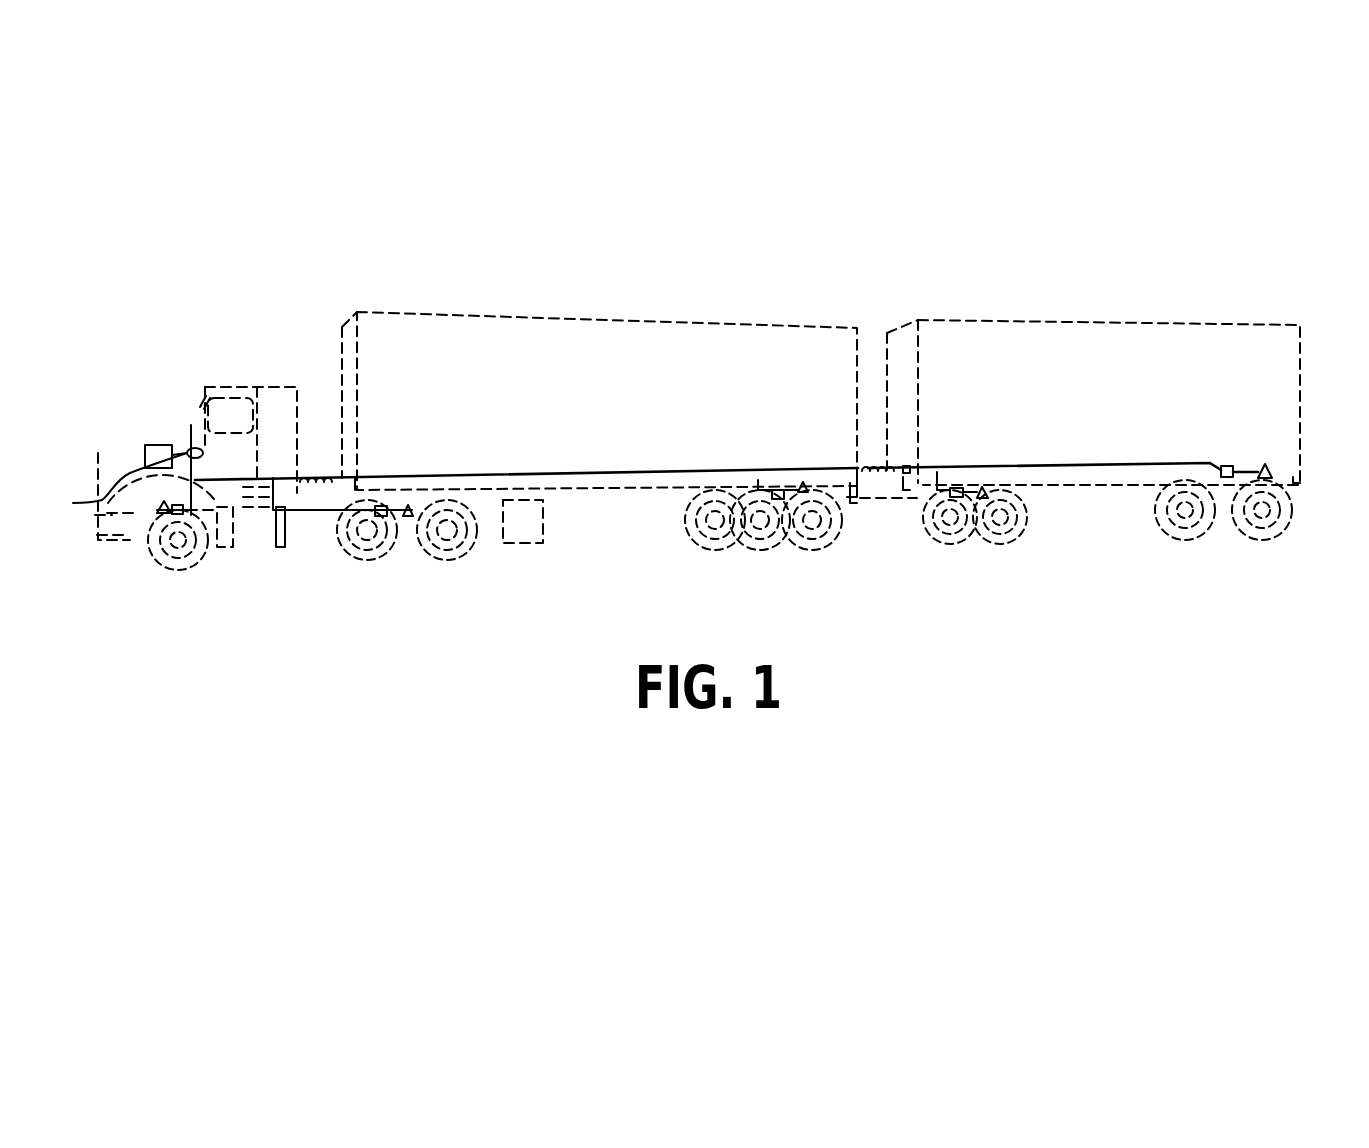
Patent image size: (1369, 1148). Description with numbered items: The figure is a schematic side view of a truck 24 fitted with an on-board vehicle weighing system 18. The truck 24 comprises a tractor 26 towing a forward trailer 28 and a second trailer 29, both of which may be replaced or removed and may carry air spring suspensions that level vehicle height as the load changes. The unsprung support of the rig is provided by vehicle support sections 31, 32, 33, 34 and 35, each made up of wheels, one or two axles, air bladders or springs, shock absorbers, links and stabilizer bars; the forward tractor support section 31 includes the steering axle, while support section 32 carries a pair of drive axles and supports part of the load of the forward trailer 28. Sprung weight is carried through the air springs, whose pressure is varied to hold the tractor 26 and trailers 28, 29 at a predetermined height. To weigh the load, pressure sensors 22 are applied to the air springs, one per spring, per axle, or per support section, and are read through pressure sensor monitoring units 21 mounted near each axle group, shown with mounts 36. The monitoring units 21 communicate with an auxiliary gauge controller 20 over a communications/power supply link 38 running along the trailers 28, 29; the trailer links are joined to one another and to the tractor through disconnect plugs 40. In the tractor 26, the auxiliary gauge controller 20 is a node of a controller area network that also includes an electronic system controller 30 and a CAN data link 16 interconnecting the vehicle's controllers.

The CAN data link 16 is at (150, 500).
The on-board vehicle weighing system 18 is at (190, 510).
The auxiliary gauge controller 20 is at (193, 447).
The pressure sensor monitoring units 21 is at (175, 514).
The pressure sensors 22 is at (157, 513).
The truck 24 is at (619, 524).
The tractor 26 is at (145, 447).
The forward trailer 28 is at (620, 316).
The second trailer 29 is at (1085, 322).
The electronic system controller 30 is at (158, 445).
The forward tractor support section 31 is at (178, 572).
The vehicle support section 32 is at (333, 540).
The vehicle support section 33 is at (777, 553).
The vehicle support section 34 is at (965, 543).
The vehicle support section 35 is at (1213, 540).
The sensor mount / axle 36 is at (397, 507).
The communications/power supply link 38 is at (513, 477).
The disconnect plugs 40 is at (338, 477).